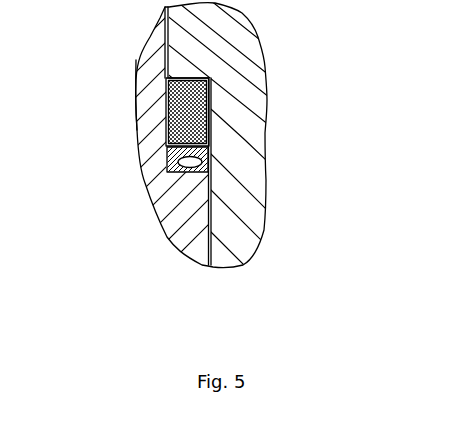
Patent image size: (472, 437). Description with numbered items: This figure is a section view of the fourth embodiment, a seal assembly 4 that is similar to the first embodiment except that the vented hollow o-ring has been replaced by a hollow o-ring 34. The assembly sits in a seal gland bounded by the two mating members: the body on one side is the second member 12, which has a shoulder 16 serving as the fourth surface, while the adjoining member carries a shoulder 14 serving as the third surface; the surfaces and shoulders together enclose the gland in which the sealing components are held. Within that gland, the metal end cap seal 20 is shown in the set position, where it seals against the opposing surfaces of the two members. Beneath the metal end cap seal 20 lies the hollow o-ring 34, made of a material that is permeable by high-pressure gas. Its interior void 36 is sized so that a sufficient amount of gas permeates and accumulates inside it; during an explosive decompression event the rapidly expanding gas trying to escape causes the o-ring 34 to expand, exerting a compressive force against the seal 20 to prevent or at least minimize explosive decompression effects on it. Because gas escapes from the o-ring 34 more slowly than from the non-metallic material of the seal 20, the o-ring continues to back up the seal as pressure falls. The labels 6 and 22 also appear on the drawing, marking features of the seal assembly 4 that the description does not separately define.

The seal assembly 4 is at (392, 40).
The outer surface 6 is at (150, 72).
The second member 12 is at (253, 218).
The shoulder 14 is at (193, 174).
The shoulder 16 is at (190, 77).
The metal end cap seal 20 is at (167, 110).
The seal assembly 22 is at (212, 143).
The hollow o-ring 34 is at (170, 153).
The interior void 36 is at (177, 172).